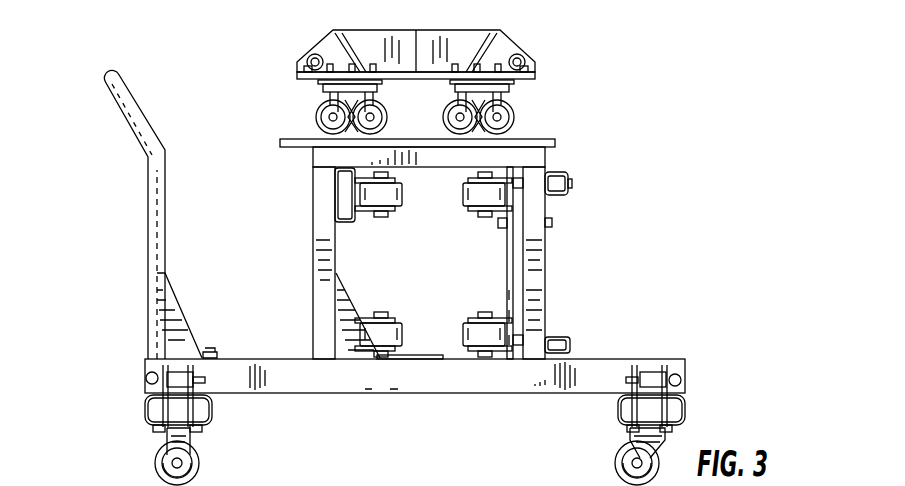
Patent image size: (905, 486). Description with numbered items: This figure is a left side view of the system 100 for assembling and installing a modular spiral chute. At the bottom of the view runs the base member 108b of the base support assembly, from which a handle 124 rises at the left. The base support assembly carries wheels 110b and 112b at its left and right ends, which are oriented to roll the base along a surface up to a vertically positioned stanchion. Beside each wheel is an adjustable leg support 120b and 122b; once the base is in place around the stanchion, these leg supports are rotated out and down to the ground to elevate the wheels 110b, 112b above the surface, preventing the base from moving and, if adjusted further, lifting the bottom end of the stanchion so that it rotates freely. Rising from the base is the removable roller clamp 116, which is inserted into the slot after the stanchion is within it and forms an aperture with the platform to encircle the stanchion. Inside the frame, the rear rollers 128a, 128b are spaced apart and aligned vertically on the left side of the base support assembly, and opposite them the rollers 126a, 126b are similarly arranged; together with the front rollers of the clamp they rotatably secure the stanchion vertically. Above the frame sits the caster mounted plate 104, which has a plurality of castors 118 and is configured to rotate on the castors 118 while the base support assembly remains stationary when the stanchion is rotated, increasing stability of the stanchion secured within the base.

The system for assembling and installing a modular spiral chute 100 is at (738, 88).
The caster mounted plate 104 is at (512, 42).
The base frame beam 108b is at (445, 383).
The wheel 110b is at (158, 470).
The wheel 112b is at (620, 462).
The removable roller clamp 116 is at (545, 278).
The castors 118 is at (510, 117).
The adjustable leg support 120b is at (165, 375).
The adjustable leg support 122b is at (655, 370).
The handle 124 is at (112, 75).
The roller 126a is at (466, 192).
The roller 126b is at (470, 333).
The rear roller 128a is at (370, 198).
The rear roller 128b is at (370, 337).